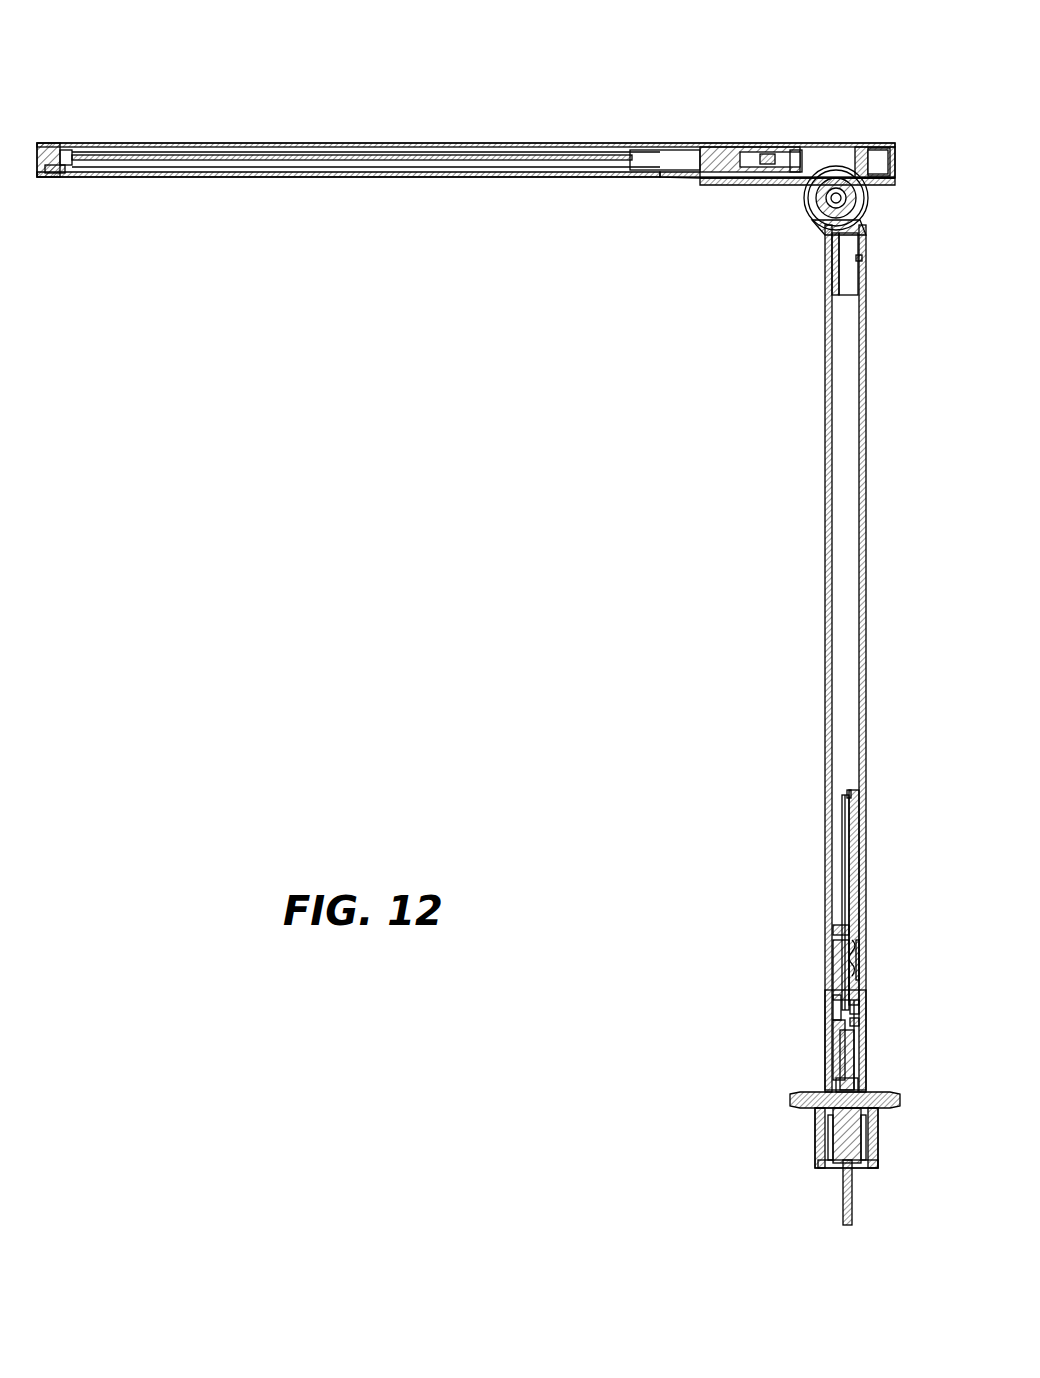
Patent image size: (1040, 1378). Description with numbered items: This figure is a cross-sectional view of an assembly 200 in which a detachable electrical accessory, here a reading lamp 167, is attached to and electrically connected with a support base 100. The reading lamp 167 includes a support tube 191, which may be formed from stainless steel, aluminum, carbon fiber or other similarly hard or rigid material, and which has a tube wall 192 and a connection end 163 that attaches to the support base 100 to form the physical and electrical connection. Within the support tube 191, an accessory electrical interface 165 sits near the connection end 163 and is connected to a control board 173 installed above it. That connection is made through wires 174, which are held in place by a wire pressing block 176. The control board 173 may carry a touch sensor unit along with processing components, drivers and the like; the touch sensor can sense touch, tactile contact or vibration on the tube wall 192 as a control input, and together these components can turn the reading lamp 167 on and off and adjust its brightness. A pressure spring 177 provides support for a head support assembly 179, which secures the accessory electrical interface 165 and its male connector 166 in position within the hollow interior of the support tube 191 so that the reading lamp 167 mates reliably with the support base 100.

The assembly 200 is at (238, 52).
The reading lamp 167 is at (832, 115).
The support tube 191 is at (867, 755).
The tube wall 192 is at (866, 858).
The control board 173 is at (846, 871).
The wires 174 is at (853, 948).
The wire pressing block 176 is at (847, 958).
The pressure spring 177 is at (841, 1042).
The head support assembly 179 is at (859, 1012).
The connection end 163 is at (878, 1037).
The accessory electrical interface 165 is at (845, 1069).
The male connector 166 is at (846, 1089).
The support base 100 is at (895, 1082).